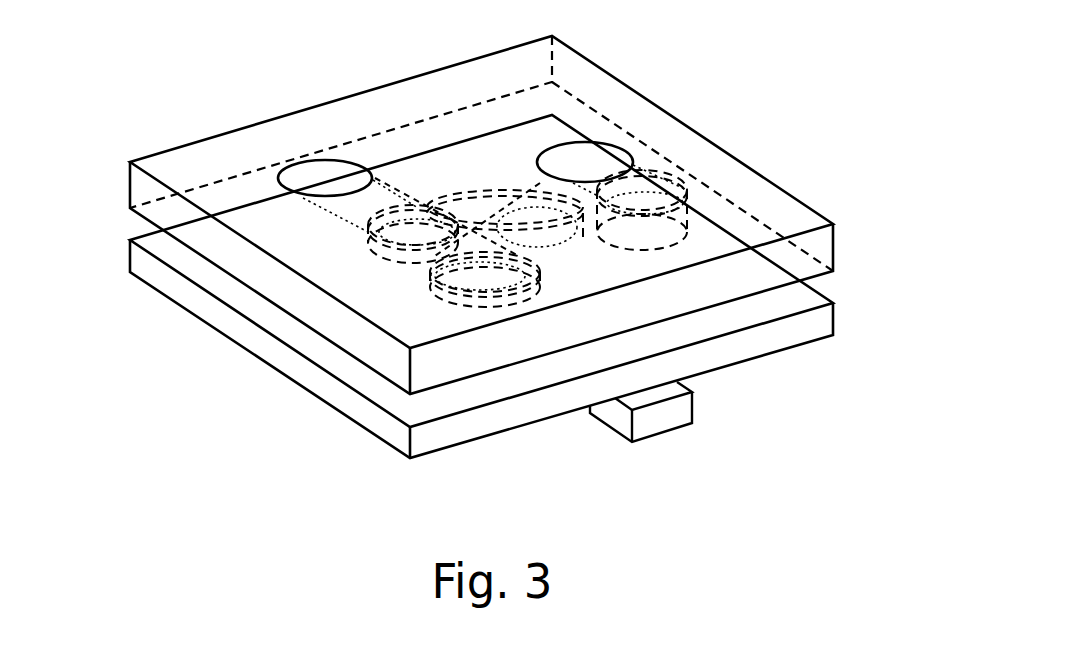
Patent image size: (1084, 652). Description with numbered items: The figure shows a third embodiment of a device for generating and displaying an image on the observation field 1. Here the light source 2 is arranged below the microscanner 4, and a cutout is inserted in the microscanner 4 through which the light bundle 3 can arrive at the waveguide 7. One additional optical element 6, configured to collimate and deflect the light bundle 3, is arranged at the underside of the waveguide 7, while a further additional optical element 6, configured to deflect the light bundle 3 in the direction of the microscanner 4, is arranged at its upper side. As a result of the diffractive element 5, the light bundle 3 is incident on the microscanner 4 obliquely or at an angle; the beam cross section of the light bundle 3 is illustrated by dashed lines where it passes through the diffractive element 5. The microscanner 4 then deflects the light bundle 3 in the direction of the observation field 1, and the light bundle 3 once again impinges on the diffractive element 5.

The observation field 1 is at (280, 166).
The light source 2 is at (693, 408).
The light bundle 3 is at (683, 218).
The microscanner 4 is at (833, 320).
The diffractive element 5 is at (382, 265).
The additional optical element 6 is at (633, 158).
The waveguide 7 is at (753, 169).